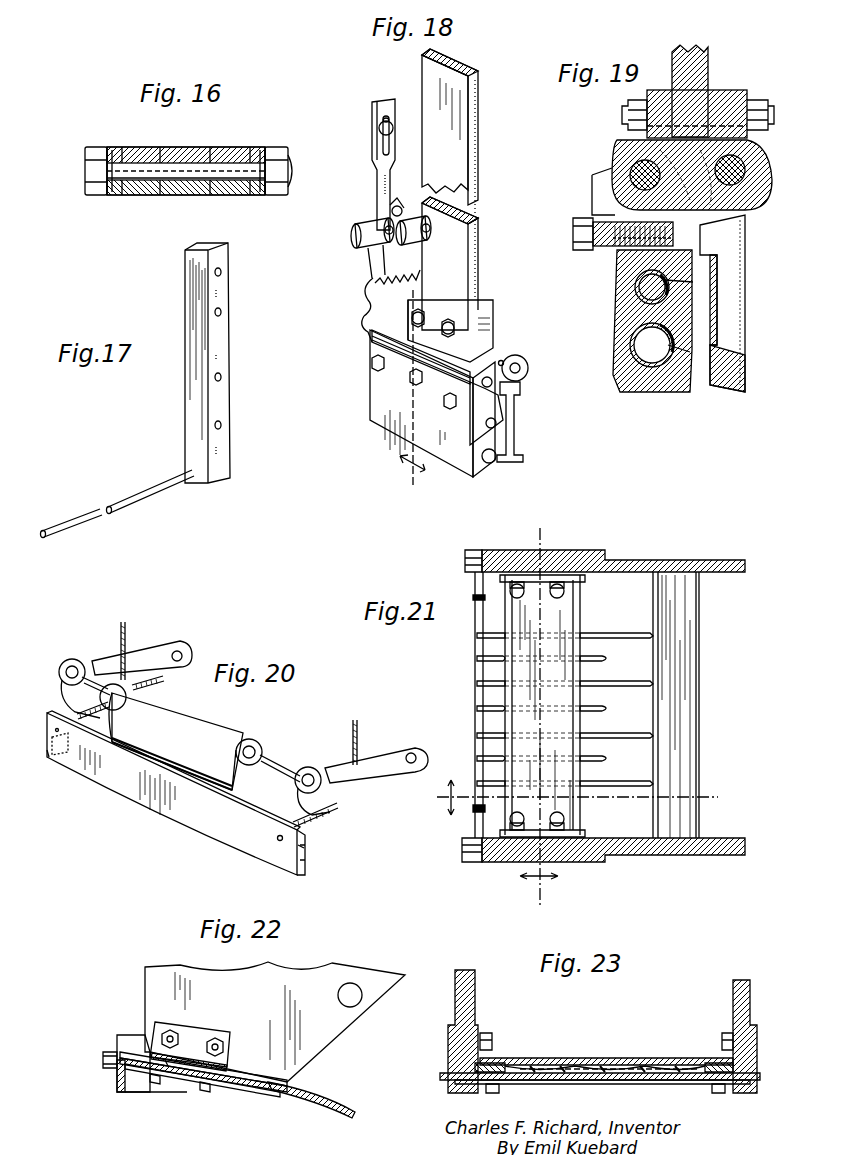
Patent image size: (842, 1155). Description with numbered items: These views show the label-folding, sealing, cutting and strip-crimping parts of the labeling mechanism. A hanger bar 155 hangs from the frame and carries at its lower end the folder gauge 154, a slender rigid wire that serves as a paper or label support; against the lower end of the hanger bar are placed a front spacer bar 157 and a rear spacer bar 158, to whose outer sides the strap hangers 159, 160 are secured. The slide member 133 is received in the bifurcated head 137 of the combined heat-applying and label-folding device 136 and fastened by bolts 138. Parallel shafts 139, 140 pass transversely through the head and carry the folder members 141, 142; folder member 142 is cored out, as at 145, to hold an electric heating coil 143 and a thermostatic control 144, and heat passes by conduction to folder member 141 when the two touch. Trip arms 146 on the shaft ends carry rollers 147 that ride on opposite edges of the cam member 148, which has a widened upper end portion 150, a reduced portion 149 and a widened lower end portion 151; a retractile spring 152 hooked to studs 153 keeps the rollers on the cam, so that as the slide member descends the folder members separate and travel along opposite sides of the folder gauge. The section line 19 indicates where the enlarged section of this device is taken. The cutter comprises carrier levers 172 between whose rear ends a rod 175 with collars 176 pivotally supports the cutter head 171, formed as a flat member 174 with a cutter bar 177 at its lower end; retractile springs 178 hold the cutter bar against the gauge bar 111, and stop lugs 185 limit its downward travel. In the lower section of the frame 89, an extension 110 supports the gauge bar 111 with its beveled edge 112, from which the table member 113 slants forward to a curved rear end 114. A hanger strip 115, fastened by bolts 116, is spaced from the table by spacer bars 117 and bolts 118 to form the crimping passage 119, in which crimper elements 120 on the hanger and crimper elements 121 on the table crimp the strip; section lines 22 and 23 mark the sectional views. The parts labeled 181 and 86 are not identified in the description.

In FIG. 16, the hanger bar 155 is at (195, 150).
In FIG. 17, the hanger bar 155 is at (229, 338).
In FIG. 16, the front spacer bar 157 is at (236, 150).
In FIG. 16, the rear spacer bar 158 is at (143, 150).
In FIG. 16, the front strap hanger 159 is at (258, 196).
In FIG. 16, the rear strap hanger 160 is at (110, 196).
In FIG. 17, the folder gauge 154 is at (129, 495).
In FIG. 18, the slide member 133 is at (488, 200).
In FIG. 19, the slide member 133 is at (705, 70).
In FIG. 18, the cam member 148 is at (370, 155).
In FIG. 18, the widened upper end portion 150 is at (378, 130).
In FIG. 18, the reduced portion 149 is at (383, 190).
In FIG. 18, the rollers 147 is at (395, 217).
In FIG. 18, the trip arms 146 is at (410, 254).
In FIG. 18, the studs 153 is at (418, 274).
In FIG. 18, the widened lower end portion 151 is at (362, 288).
In FIG. 18, the retractile spring 152 is at (362, 332).
In FIG. 18, the bolts 138 is at (470, 315).
In FIG. 19, the bolts 138 is at (626, 113).
In FIG. 18, the head 137 is at (498, 322).
In FIG. 19, the head 137 is at (752, 156).
In FIG. 18, the combined heat-applying and label-folding device 136 is at (520, 355).
In FIG. 19, the combined heat-applying and label-folding device 136 is at (756, 96).
In FIG. 18, the shaft 139 is at (520, 367).
In FIG. 19, the shaft 139 is at (745, 176).
In FIG. 18, the folder member 141 is at (515, 425).
In FIG. 19, the folder member 141 is at (740, 316).
In FIG. 18, the folder member 142 is at (385, 420).
In FIG. 19, the folder member 142 is at (620, 318).
In FIG. 18, the shaft 140 is at (486, 388).
In FIG. 19, the shaft 140 is at (600, 170).
In FIG. 18, the section line 19 is at (421, 396).
In FIG. 19, the thermostatic control 144 is at (640, 283).
In FIG. 19, the electric heating coil 143 is at (628, 362).
In FIG. 19, the cored-out portion 145 is at (688, 282).
In FIG. 20, the cutter bar 177 is at (162, 822).
In FIG. 20, the cutter head 171 is at (176, 741).
In FIG. 20, the collars 176 is at (118, 695).
In FIG. 20, the rod 175 is at (278, 765).
In FIG. 20, the flat member 174 is at (236, 782).
In FIG. 20, the carrier levers 172 is at (165, 640).
In FIG. 20, the screw 181 is at (120, 645).
In FIG. 20, the retractile springs 178 is at (160, 682).
In FIG. 20, the stop lugs 185 is at (48, 755).
In FIG. 21, the lower section of the frame 89 is at (677, 556).
In FIG. 22, the lower section of the frame 89 is at (350, 1033).
In FIG. 23, the lower section of the frame 89 is at (477, 992).
In FIG. 21, the extension 110 is at (488, 863).
In FIG. 22, the extension 110 is at (133, 1040).
In FIG. 21, the beveled edge 112 is at (478, 670).
In FIG. 22, the beveled edge 112 is at (115, 1080).
In FIG. 21, the gauge bar 111 is at (477, 717).
In FIG. 22, the gauge bar 111 is at (120, 1095).
In FIG. 21, the hanger strip 115 is at (572, 622).
In FIG. 22, the hanger strip 115 is at (178, 1055).
In FIG. 23, the hanger strip 115 is at (612, 1062).
In FIG. 21, the bolts 116 is at (580, 588).
In FIG. 22, the bolts 116 is at (225, 1045).
In FIG. 23, the bolts 116 is at (488, 1042).
In FIG. 21, the crimper elements 120 is at (640, 638).
In FIG. 22, the crimper elements 120 is at (252, 1078).
In FIG. 23, the crimper elements 120 is at (560, 1060).
In FIG. 21, the crimper elements 121 is at (596, 660).
In FIG. 22, the crimper elements 121 is at (166, 1072).
In FIG. 23, the crimper elements 121 is at (640, 1081).
In FIG. 21, the table member 113 is at (624, 715).
In FIG. 22, the table member 113 is at (186, 1082).
In FIG. 23, the table member 113 is at (585, 1084).
In FIG. 21, the curved rear end 114 is at (664, 766).
In FIG. 22, the curved rear end 114 is at (304, 1106).
In FIG. 21, the section line 22 is at (580, 797).
In FIG. 21, the section line 23 is at (539, 716).
In FIG. 22, the crimping passage 119 is at (190, 1060).
In FIG. 23, the crimping passage 119 is at (512, 1065).
In FIG. 22, the bolts 118 is at (206, 1094).
In FIG. 23, the bolts 118 is at (480, 1090).
In FIG. 23, the spacer bars 117 is at (758, 1071).
In FIG. 23, the shaft 86 is at (645, 1061).